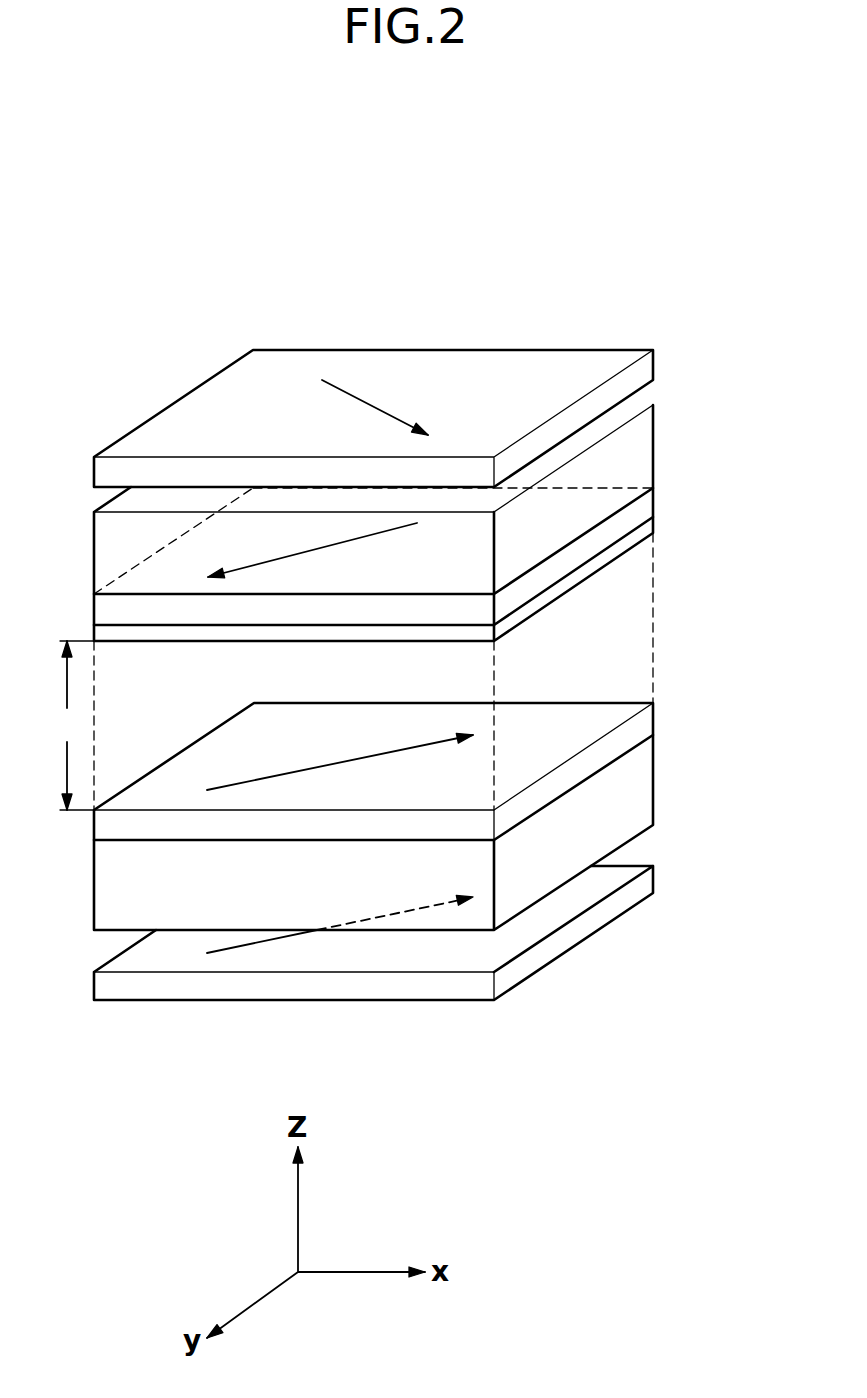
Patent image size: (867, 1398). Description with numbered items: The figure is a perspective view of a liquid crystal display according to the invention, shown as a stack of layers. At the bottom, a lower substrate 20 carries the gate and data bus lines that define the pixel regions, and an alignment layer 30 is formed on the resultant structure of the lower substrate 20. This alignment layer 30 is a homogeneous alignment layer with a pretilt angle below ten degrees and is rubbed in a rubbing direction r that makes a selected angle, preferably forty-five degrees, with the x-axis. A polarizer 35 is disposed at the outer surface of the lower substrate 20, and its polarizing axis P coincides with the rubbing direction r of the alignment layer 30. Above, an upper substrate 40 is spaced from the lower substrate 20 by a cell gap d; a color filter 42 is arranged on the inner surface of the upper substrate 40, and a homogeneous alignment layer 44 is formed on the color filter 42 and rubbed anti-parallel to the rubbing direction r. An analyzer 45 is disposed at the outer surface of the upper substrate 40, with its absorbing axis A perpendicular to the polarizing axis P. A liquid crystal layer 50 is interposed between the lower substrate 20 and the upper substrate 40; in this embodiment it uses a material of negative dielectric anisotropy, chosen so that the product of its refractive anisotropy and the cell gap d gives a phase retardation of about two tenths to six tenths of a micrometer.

The lower substrate 20 is at (653, 793).
The alignment layer 30 is at (653, 724).
The polarizer 35 is at (653, 884).
The upper substrate 40 is at (653, 446).
The color filter 42 is at (653, 498).
The homogeneous alignment layer 44 is at (653, 535).
The analyzer 45 is at (653, 373).
The liquid crystal layer 50 is at (653, 625).
The absorbing axis A is at (367, 402).
The rubbing direction r is at (340, 660).
The polarizing axis P is at (408, 912).
The cell gap d is at (76, 725).